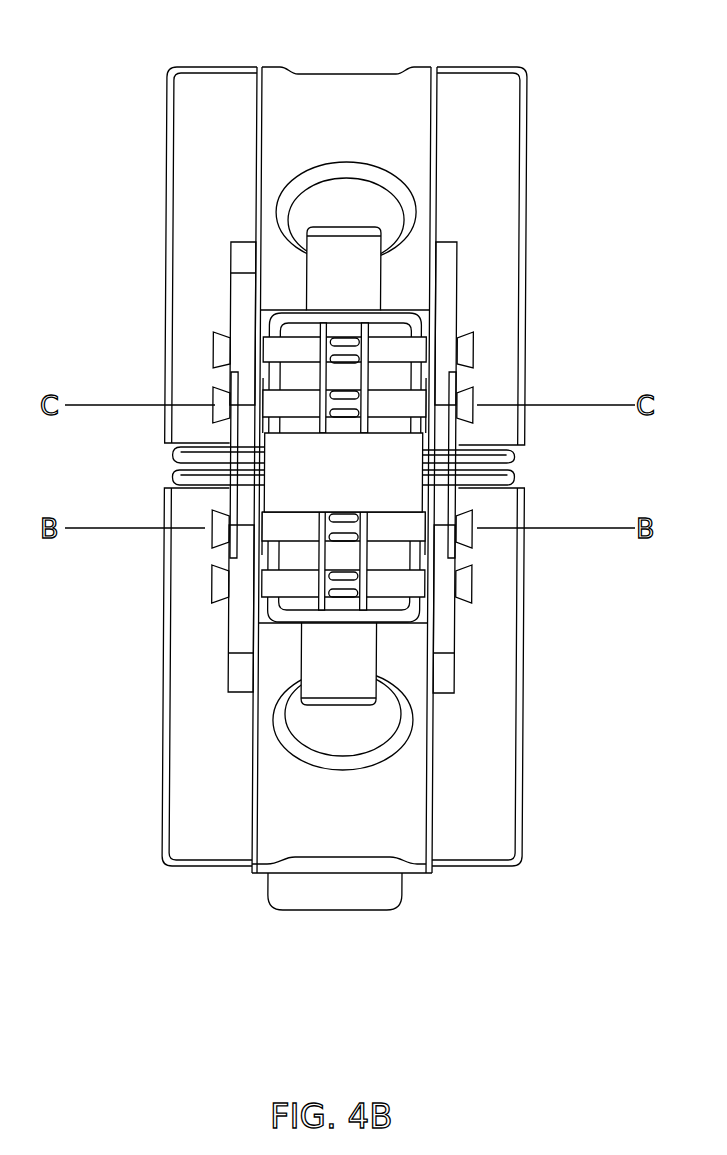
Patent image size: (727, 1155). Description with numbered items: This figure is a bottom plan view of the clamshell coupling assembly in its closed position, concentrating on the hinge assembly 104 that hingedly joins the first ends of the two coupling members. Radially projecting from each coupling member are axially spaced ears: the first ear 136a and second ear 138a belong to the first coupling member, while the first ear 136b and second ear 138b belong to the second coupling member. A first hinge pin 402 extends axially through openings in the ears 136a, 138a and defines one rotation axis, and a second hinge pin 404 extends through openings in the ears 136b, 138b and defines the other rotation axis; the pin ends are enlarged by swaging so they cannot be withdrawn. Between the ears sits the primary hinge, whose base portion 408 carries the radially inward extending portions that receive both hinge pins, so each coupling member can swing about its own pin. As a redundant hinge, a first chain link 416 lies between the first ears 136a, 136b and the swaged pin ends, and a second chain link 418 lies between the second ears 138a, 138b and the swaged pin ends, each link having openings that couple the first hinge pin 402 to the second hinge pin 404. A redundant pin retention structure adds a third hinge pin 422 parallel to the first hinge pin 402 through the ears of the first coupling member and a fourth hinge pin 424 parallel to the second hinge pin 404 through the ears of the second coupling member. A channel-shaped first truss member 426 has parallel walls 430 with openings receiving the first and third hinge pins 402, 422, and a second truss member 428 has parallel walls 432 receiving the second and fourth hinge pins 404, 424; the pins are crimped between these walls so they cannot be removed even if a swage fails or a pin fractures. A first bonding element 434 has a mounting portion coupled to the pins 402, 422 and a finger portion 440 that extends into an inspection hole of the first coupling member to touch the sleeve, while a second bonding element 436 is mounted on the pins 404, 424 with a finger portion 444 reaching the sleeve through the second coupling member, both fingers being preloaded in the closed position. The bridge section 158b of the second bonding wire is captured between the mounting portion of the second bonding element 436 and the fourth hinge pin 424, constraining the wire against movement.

The hinge assembly 104 is at (481, 394).
The first ear of first coupling member 136a is at (447, 640).
The first ear of second coupling member 136b is at (445, 287).
The second ear of first coupling member 138a is at (240, 628).
The second ear of second coupling member 138b is at (242, 328).
The bridge section of second bonding wire 158b is at (266, 310).
The first hinge pin 402 is at (397, 532).
The second hinge pin 404 is at (405, 407).
The base portion 408 is at (360, 485).
The first chain link 416 is at (455, 493).
The second chain link 418 is at (232, 427).
The third hinge pin 422 is at (397, 582).
The fourth hinge pin 424 is at (407, 348).
The first truss member 426 is at (314, 557).
The second truss member 428 is at (314, 379).
The parallel walls of first truss member 430 is at (370, 600).
The parallel walls of second truss member 432 is at (370, 346).
The first bonding element 434 is at (294, 670).
The second bonding element 436 is at (390, 292).
The finger portion of first bonding element 440 is at (358, 712).
The finger portion of second bonding element 444 is at (345, 224).